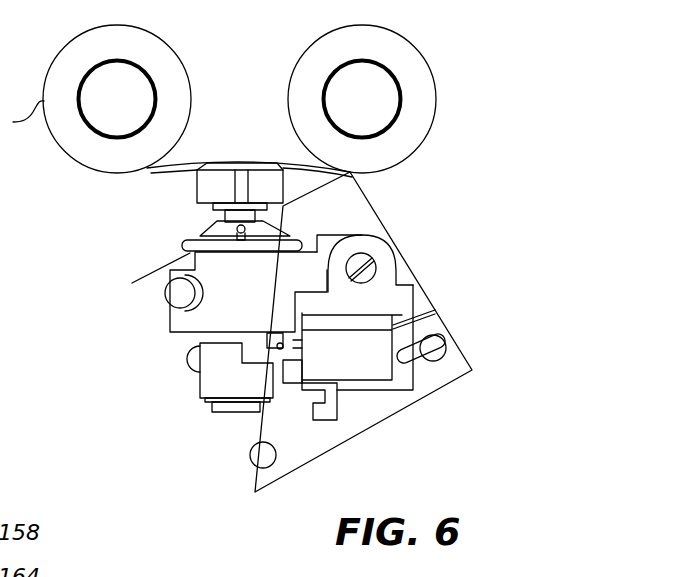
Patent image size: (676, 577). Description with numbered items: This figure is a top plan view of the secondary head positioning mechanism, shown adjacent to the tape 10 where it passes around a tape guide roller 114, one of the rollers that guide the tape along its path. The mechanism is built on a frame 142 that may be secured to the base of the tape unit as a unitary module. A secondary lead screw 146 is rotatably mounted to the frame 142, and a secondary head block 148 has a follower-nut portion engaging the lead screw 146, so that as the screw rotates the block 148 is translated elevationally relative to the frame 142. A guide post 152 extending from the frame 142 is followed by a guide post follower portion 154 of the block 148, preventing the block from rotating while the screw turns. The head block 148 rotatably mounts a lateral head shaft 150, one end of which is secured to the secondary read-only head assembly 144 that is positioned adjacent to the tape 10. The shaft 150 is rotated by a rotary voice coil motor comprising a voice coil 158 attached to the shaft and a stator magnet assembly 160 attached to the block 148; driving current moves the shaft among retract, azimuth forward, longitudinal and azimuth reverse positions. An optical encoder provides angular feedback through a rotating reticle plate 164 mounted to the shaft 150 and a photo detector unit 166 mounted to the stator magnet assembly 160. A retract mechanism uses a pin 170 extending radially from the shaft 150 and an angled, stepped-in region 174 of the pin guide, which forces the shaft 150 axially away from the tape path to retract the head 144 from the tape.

The tape 10 is at (208, 162).
The tape guide roller 114 is at (383, 27).
The frame 142 is at (217, 448).
The secondary read-only head assembly 144 is at (197, 187).
The secondary lead screw 146 is at (376, 262).
The secondary head block 148 is at (185, 250).
The lateral head shaft 150 is at (268, 211).
The guide post 152 is at (165, 293).
The guide post follower portion 154 is at (169, 332).
The voice coil 158 is at (252, 364).
The stator magnet assembly 160 is at (382, 372).
The rotating reticle plate 164 is at (290, 400).
The photo detector unit 166 is at (333, 415).
The pin 170 is at (250, 233).
The stepped-in region 174 is at (200, 228).